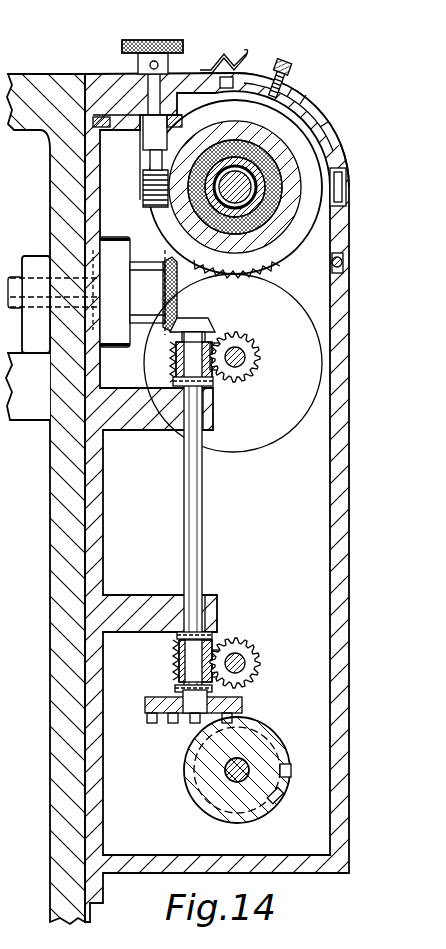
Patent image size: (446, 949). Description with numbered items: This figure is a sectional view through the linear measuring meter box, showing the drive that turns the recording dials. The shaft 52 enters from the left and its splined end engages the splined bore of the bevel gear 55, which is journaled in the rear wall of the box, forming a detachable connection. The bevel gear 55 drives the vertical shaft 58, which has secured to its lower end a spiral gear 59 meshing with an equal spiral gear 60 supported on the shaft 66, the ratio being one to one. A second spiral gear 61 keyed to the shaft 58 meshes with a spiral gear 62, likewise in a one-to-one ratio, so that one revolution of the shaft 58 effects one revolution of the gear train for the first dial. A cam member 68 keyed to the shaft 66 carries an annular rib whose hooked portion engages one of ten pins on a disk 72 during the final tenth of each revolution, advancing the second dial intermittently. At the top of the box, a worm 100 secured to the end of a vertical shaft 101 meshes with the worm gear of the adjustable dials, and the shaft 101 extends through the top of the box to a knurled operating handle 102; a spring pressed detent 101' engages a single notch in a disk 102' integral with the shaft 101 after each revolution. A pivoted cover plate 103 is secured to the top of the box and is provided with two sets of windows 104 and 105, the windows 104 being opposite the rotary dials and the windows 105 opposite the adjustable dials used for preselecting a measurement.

The shaft 52 is at (15, 277).
The bevel gear 55 is at (168, 261).
The vertical shaft 58 is at (196, 542).
The spiral gear 59 is at (177, 667).
The spiral gear 60 is at (257, 648).
The spiral gear 61 is at (173, 372).
The spiral gear 62 is at (258, 358).
The shaft 66 is at (243, 768).
The cam member 68 is at (264, 805).
The disk 72 is at (157, 698).
The worm 100 is at (143, 185).
The vertical shaft 101 is at (123, 112).
The spring pressed detent 101' is at (111, 138).
The knurled operating handle 102 is at (173, 50).
The disk 102' is at (145, 145).
The pivoted cover plate 103 is at (340, 144).
The windows 104 is at (348, 184).
The windows 105 is at (313, 102).